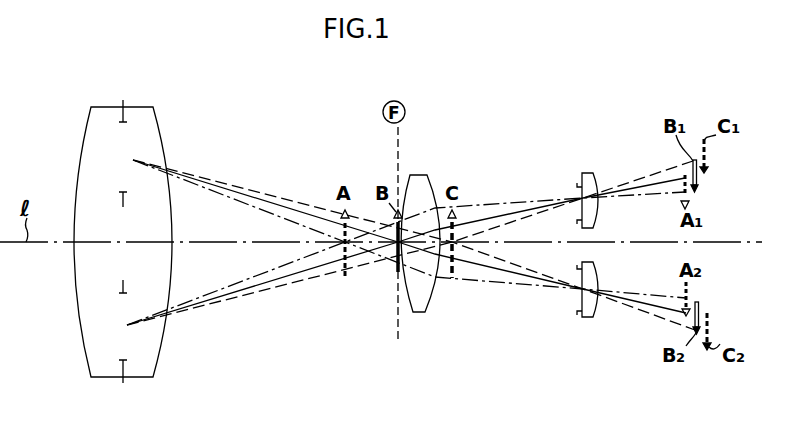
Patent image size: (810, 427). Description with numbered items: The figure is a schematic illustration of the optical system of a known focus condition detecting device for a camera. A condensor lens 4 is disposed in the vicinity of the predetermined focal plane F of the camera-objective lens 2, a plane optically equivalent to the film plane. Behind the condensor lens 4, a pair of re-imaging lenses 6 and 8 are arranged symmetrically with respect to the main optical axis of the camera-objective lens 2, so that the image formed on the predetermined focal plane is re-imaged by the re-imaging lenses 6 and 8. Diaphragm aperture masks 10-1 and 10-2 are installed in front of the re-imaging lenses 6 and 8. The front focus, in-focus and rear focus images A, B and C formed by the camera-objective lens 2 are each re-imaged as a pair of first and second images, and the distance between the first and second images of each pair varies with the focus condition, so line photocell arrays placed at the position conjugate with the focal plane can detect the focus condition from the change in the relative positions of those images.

The camera-objective lens 2 is at (101, 103).
The condensor lens 4 is at (414, 172).
The re-imaging lens 6 is at (591, 170).
The re-imaging lens 8 is at (596, 321).
The diaphragm aperture mask 10-1 is at (579, 183).
The diaphragm aperture mask 10-2 is at (578, 310).